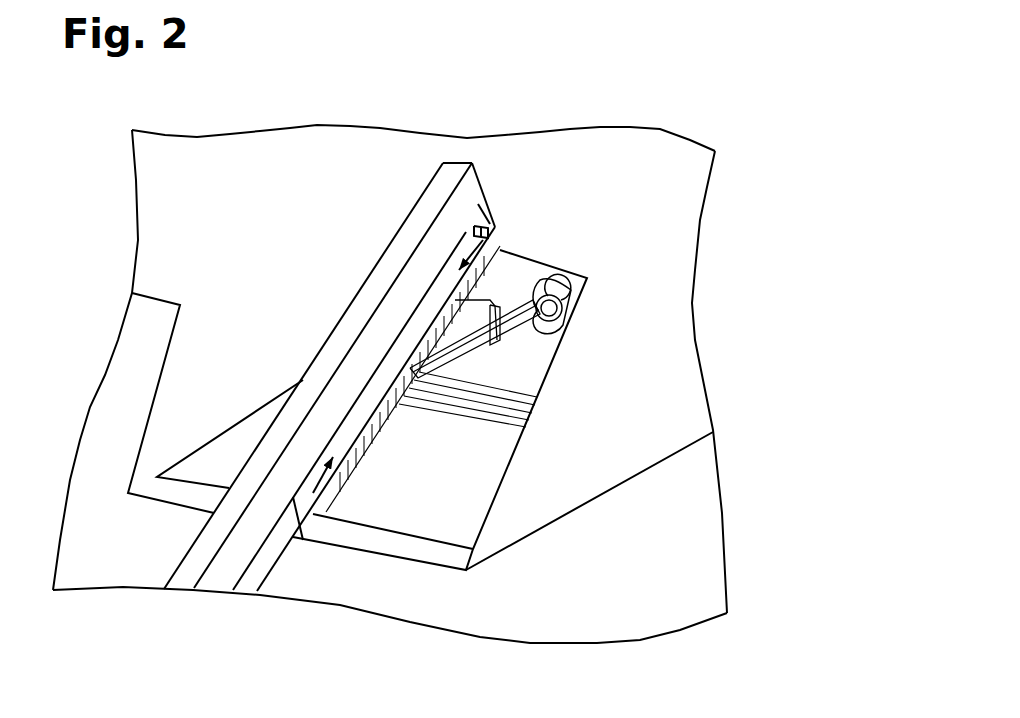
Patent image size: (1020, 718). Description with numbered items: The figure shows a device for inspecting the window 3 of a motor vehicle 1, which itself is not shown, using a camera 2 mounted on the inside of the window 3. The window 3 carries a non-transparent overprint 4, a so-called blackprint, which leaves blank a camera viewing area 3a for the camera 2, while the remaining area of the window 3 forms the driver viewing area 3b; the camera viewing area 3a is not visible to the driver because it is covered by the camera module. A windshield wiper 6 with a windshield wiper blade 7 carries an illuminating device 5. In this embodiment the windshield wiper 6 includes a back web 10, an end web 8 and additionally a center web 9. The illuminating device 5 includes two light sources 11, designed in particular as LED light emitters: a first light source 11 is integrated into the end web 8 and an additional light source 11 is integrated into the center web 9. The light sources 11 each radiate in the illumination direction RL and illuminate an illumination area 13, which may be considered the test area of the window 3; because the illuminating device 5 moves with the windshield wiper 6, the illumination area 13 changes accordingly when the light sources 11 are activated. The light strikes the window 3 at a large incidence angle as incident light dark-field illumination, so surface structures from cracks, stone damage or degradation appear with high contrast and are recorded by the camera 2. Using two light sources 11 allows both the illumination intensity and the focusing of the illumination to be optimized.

The motor vehicle 1 is at (769, 113).
The camera 2 is at (572, 292).
The window 3 is at (667, 598).
The camera viewing area 3a is at (483, 463).
The driver viewing area 3b is at (618, 518).
The non-transparent overprint 4 is at (272, 296).
The illuminating device 5 is at (504, 197).
The windshield wiper 6 is at (372, 272).
The windshield wiper blade 7 is at (427, 299).
The end web 8 is at (487, 194).
The center web 9 is at (282, 512).
The back web 10 is at (446, 166).
The light source 11 is at (490, 227).
The illumination area 13 is at (492, 257).
The illumination direction RL is at (492, 242).